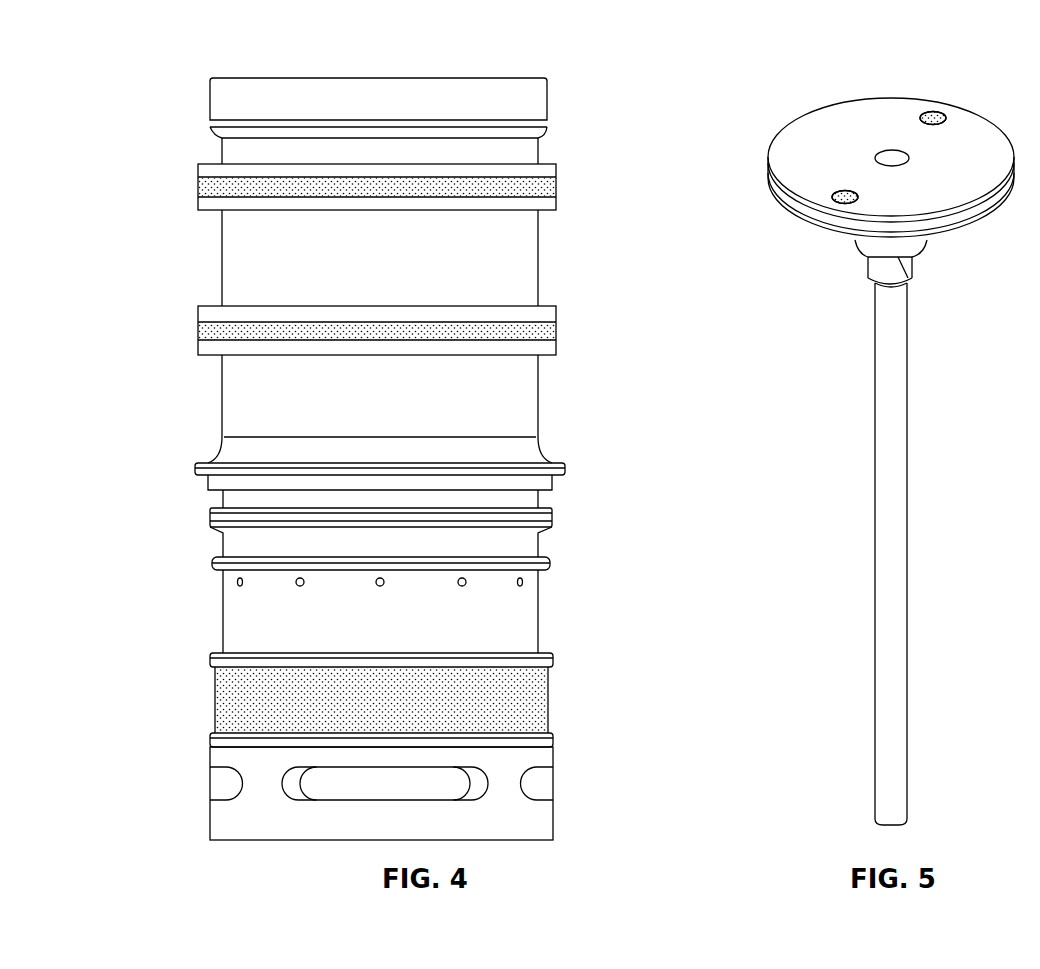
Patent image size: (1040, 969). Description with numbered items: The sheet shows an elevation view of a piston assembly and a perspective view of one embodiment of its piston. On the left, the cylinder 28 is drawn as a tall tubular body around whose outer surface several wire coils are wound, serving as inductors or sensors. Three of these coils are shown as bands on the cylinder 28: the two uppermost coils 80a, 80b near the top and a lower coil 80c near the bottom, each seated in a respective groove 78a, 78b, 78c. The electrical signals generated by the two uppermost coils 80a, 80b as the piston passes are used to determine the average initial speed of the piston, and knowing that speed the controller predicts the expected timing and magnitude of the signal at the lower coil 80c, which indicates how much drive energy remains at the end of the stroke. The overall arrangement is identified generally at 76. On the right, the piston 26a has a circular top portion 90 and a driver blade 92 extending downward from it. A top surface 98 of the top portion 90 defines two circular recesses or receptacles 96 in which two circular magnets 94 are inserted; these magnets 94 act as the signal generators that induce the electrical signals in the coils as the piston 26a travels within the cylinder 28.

In FIG. 4, the cylinder 28 is at (540, 286).
In FIG. 4, the first groove 78a is at (196, 186).
In FIG. 4, the second groove 78b is at (196, 329).
In FIG. 4, the third groove 78c is at (199, 697).
In FIG. 4, the uppermost coil 80a is at (554, 190).
In FIG. 4, the uppermost coil 80b is at (554, 333).
In FIG. 4, the lower coil 80c is at (546, 700).
In FIG. 5, the assembly 76 is at (645, 200).
In FIG. 5, the piston 26a is at (863, 439).
In FIG. 5, the circular top portion 90 is at (845, 117).
In FIG. 5, the driver blade 92 is at (887, 543).
In FIG. 5, the circular magnets 94 is at (951, 116).
In FIG. 5, the circular recesses 96 is at (939, 112).
In FIG. 5, the top surface 98 is at (913, 171).